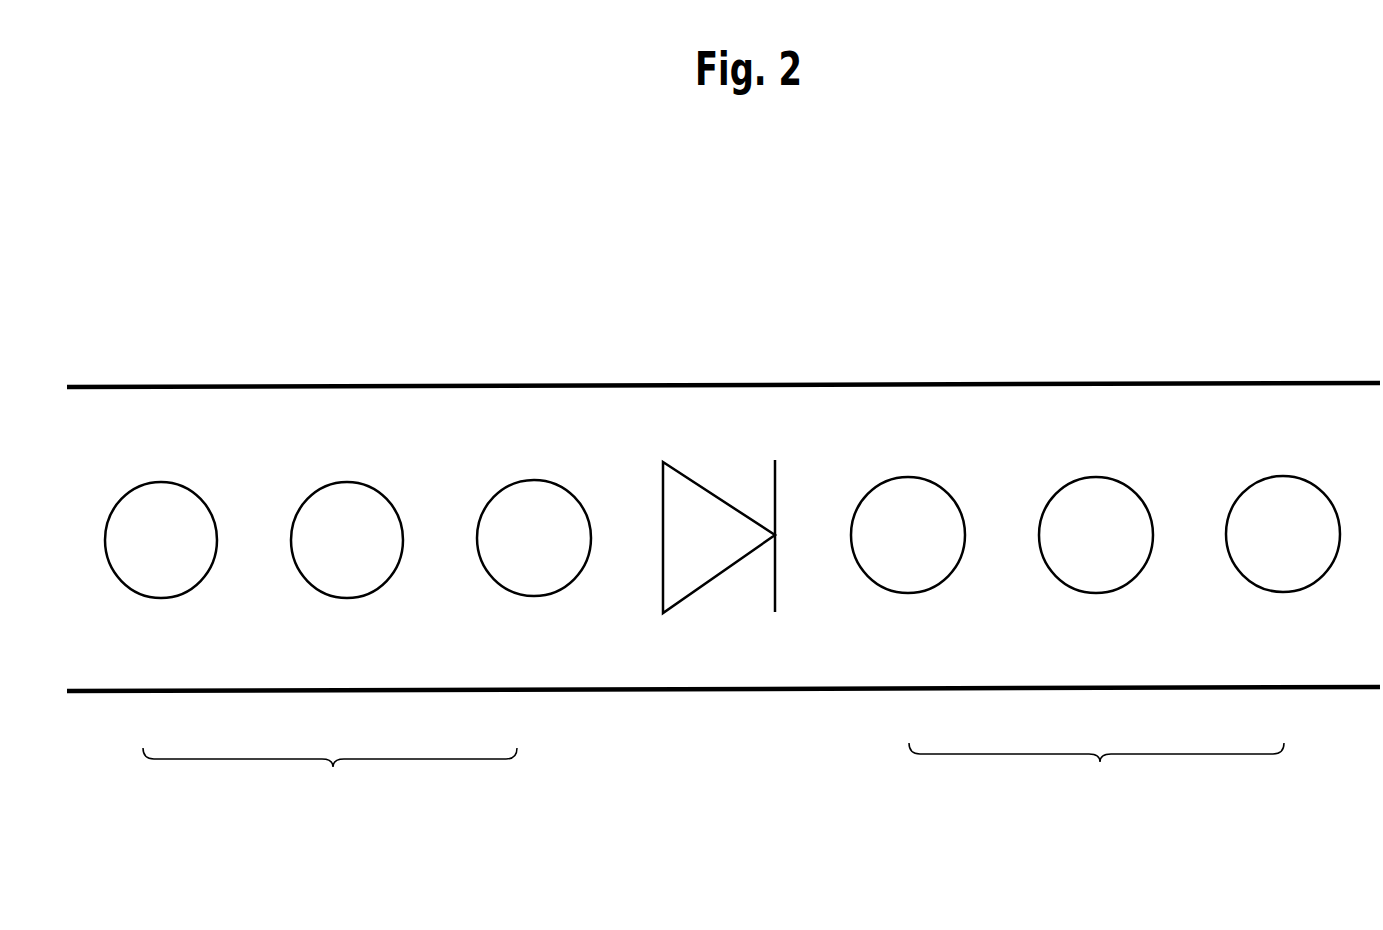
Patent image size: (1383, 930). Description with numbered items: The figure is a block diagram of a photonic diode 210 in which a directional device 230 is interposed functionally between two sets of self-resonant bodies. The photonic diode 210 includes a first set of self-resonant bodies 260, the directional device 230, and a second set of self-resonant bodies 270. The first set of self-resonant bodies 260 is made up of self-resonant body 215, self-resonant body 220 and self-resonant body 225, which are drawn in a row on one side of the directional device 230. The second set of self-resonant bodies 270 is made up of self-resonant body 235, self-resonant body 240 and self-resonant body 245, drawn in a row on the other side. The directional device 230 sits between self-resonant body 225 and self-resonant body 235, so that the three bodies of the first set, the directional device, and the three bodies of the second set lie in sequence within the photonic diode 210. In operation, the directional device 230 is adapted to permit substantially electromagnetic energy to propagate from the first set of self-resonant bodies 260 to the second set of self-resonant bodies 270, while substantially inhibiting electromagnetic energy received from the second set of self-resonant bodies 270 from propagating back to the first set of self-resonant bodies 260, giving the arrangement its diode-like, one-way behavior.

The photonic diode 210 is at (628, 382).
The self-resonant body 215 is at (162, 481).
The self-resonant body 220 is at (346, 481).
The self-resonant body 225 is at (537, 478).
The directional device 230 is at (663, 460).
The self-resonant body 235 is at (910, 476).
The self-resonant body 240 is at (1097, 476).
The self-resonant body 245 is at (1285, 476).
The first set of self-resonant bodies 260 is at (330, 774).
The second set of self-resonant bodies 270 is at (1096, 774).